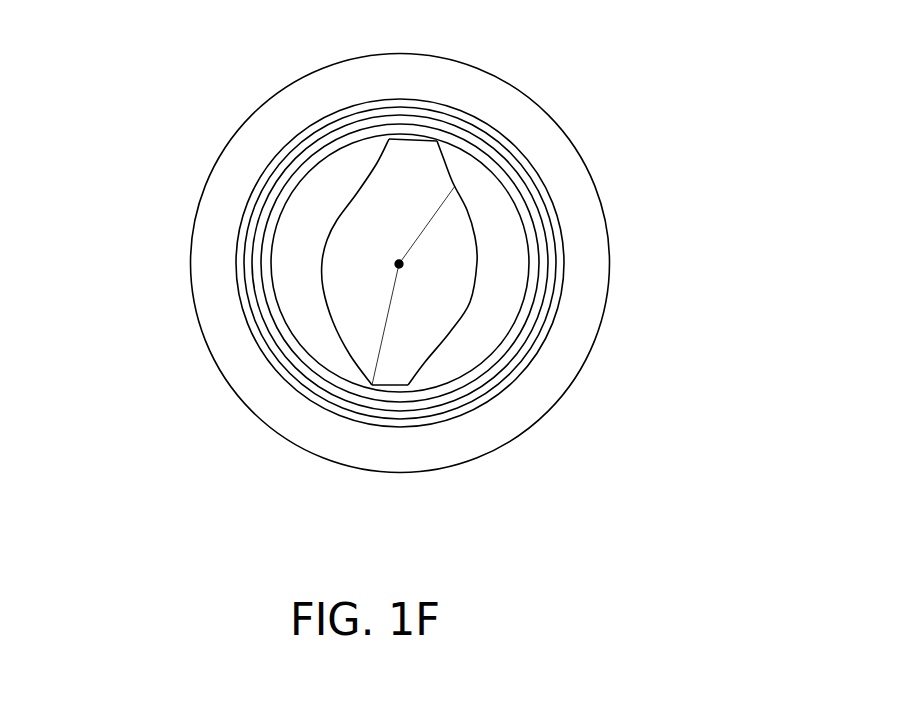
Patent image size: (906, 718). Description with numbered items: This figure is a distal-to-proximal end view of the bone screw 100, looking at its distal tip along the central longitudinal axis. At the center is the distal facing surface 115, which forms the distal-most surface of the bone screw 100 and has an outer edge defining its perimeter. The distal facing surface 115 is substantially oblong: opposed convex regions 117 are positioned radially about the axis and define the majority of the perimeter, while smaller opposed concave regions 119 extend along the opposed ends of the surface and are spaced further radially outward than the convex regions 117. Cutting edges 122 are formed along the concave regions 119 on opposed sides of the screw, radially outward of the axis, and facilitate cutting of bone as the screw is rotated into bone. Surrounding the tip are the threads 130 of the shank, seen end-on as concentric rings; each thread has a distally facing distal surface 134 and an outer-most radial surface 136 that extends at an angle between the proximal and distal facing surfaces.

The bone screw 100 is at (187, 178).
The distal facing surface 115 is at (391, 270).
The convex regions 117 is at (323, 248).
The concave regions 119 is at (375, 162).
The cutting edges 122 is at (378, 167).
The threads 130 is at (270, 255).
The distal surface 134 is at (325, 327).
The outer-most radial surface 136 is at (447, 147).